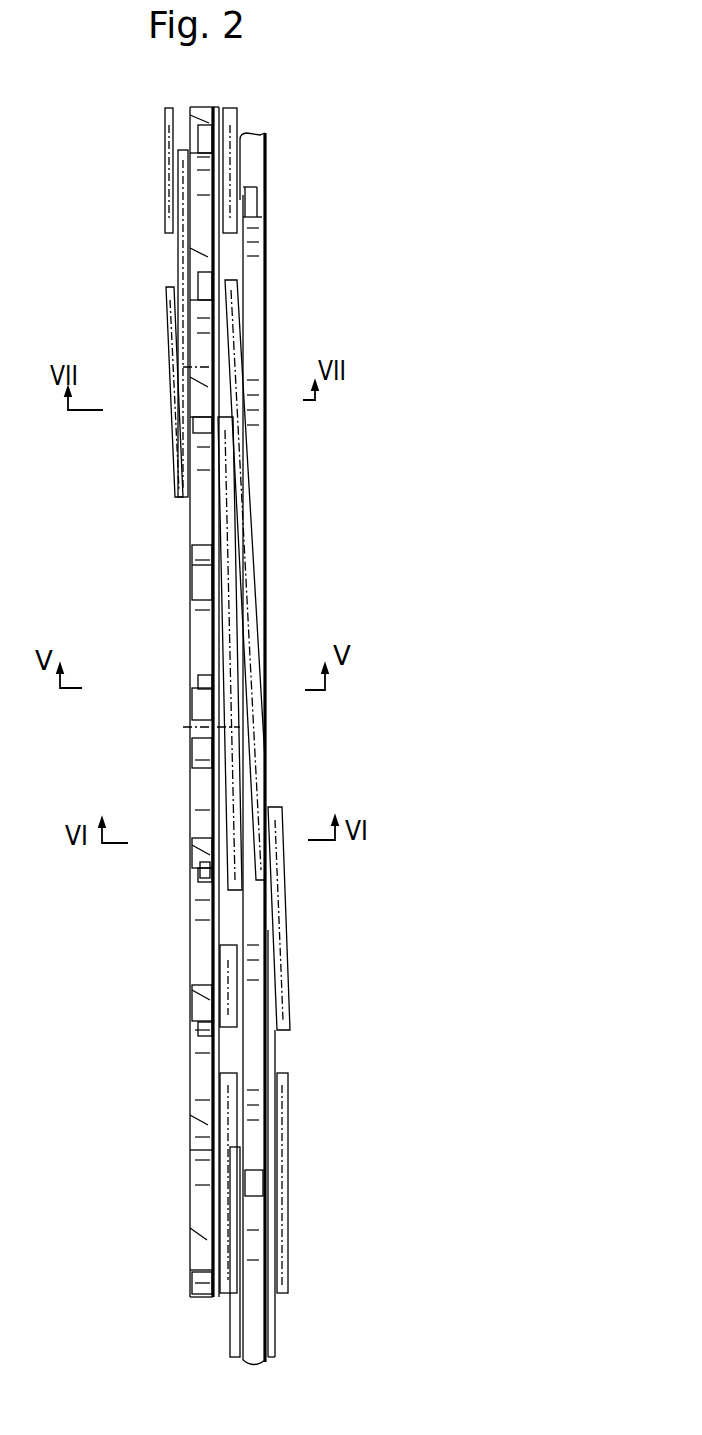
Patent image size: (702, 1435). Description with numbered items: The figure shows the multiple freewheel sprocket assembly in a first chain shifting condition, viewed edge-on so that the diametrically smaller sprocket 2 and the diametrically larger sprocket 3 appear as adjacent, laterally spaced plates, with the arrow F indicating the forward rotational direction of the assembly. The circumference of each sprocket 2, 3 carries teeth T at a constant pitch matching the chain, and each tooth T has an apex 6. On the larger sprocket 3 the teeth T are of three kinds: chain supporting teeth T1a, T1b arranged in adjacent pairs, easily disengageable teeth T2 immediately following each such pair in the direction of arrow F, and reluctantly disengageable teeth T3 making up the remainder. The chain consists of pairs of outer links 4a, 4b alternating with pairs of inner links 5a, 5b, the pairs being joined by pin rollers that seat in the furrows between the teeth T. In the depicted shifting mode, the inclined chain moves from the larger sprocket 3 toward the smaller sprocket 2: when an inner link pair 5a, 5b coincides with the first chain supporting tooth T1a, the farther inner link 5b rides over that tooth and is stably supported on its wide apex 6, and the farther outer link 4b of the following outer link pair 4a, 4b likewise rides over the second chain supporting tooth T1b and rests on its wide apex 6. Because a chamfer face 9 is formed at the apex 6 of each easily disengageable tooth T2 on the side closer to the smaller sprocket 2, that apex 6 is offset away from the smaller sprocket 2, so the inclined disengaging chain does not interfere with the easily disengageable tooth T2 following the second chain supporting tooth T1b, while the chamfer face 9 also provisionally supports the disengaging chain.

The smaller sprocket 2 is at (274, 1322).
The larger sprocket 3 is at (180, 1285).
The outer link 4a is at (270, 752).
The outer link 4b is at (190, 742).
The inner link 5a is at (222, 515).
The inner link 5b is at (178, 508).
The apex 6 is at (212, 135).
The chamfer face 9 is at (200, 878).
The teeth T is at (180, 1259).
The first chain supporting tooth T1a is at (180, 545).
The second chain supporting tooth T1b is at (190, 688).
The easily disengageable tooth T2 is at (185, 840).
The reluctantly disengageable tooth T3 is at (170, 130).
The forward rotational direction F is at (66, 210).